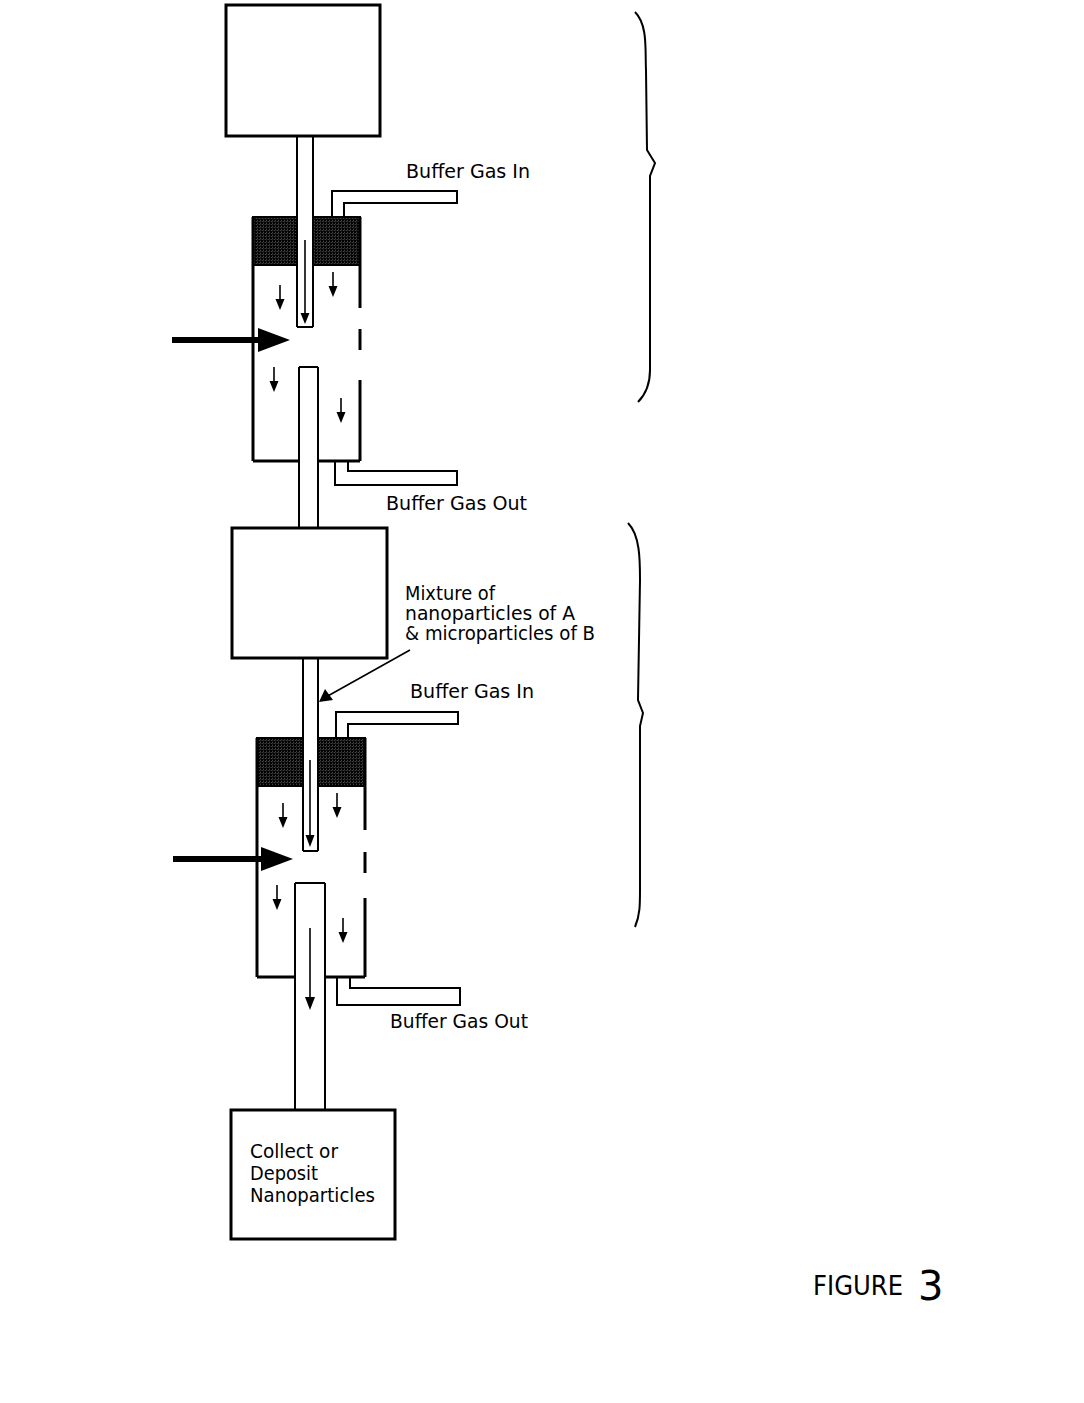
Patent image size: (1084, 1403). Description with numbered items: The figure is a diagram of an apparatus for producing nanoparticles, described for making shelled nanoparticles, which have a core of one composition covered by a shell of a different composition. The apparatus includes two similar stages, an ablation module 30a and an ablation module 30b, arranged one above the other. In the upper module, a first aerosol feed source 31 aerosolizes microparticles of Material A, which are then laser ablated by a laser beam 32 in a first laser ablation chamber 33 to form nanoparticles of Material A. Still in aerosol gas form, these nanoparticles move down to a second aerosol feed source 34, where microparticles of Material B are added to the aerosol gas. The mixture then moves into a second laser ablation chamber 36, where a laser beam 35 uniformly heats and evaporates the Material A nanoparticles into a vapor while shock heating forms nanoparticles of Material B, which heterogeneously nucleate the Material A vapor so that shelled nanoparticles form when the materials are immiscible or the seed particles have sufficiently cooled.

The ablation module 30a is at (675, 207).
The ablation module 30b is at (664, 725).
The first aerosol feed source 31 is at (384, 42).
The laser beam 32 is at (160, 341).
The first laser ablation chamber 33 is at (352, 434).
The second aerosol feed source 34 is at (222, 582).
The laser beam 35 is at (165, 860).
The second laser ablation chamber 36 is at (352, 959).